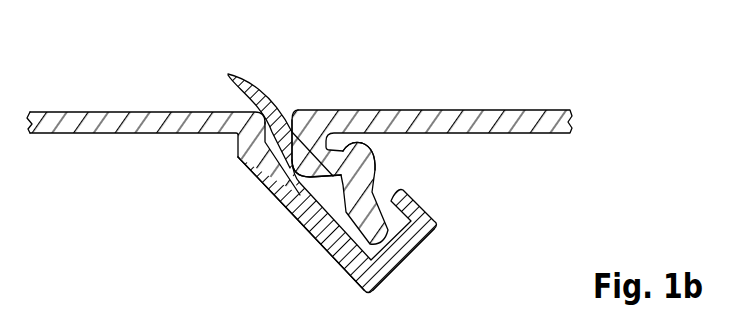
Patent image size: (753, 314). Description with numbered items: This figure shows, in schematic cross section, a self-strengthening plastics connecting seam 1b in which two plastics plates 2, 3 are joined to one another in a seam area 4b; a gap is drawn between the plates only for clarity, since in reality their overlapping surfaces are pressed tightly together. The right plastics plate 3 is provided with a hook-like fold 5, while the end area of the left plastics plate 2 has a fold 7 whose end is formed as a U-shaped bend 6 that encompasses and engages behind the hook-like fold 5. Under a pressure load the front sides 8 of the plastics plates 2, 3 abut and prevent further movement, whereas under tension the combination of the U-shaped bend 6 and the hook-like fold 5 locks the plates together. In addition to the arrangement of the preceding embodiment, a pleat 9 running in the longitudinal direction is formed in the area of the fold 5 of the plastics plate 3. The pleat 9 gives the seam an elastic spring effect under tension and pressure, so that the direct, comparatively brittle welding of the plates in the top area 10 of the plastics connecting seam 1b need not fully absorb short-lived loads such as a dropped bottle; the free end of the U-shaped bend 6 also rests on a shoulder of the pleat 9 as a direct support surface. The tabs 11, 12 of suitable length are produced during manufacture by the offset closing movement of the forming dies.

The plastics connecting seam 1b is at (552, 81).
The plastics plate 2 is at (153, 120).
The plastics plate 3 is at (460, 112).
The seam area 4b is at (278, 91).
The hook-like fold 5 is at (298, 124).
The U-shaped bend 6 is at (408, 278).
The fold 7 is at (236, 168).
The front side 8 is at (231, 78).
The pleat 9 is at (361, 167).
The top area 10 is at (444, 233).
The tab 11 is at (320, 236).
The tab 12 is at (337, 160).